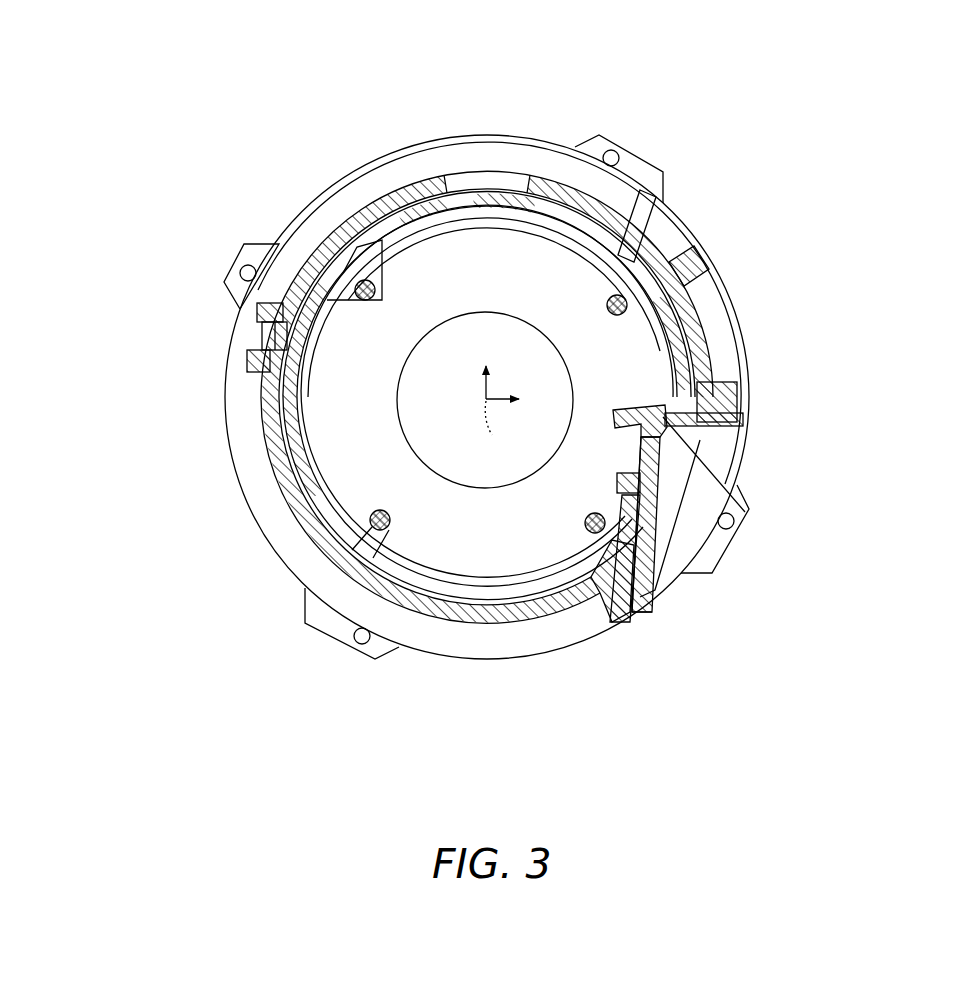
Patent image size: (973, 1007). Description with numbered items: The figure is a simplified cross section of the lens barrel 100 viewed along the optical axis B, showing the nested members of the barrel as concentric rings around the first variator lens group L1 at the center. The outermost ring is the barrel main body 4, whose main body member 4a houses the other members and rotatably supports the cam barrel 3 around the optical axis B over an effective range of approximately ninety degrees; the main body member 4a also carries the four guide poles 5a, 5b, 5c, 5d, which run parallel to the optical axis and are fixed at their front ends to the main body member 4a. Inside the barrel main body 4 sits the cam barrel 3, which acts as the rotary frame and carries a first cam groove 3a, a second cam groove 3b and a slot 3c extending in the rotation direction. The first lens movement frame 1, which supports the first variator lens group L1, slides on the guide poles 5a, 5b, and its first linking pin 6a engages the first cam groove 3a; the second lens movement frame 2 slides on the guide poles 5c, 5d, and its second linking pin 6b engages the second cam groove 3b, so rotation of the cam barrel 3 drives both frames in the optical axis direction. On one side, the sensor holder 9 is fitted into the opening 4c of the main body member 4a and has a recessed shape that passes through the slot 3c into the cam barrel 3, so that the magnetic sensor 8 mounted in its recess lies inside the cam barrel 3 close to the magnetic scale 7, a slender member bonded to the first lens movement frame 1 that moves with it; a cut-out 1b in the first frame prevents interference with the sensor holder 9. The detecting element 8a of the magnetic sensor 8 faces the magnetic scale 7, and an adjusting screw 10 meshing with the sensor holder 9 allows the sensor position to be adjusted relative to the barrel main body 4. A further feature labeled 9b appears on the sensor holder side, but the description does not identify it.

The lens barrel 100 is at (679, 112).
The first lens movement frame 1 is at (536, 210).
The cut-out 1b is at (663, 417).
The second lens movement frame 2 is at (338, 284).
The cam barrel 3 is at (680, 323).
The first cam groove 3a is at (648, 255).
The second cam groove 3b is at (278, 331).
The slot 3c is at (665, 440).
The barrel main body 4 is at (369, 138).
The main body member 4a is at (417, 155).
The opening 4c is at (683, 421).
The guide pole 5a is at (625, 300).
The guide pole 5b is at (381, 528).
The guide pole 5c is at (360, 283).
The guide pole 5d is at (598, 535).
The first linking pin 6a is at (637, 243).
The second linking pin 6b is at (273, 340).
The magnetic scale 7 is at (640, 550).
The magnetic sensor 8 is at (645, 510).
The detecting element 8a is at (655, 495).
The sensor holder 9 is at (637, 577).
The spring end 9b is at (657, 488).
The adjusting screw 10 is at (677, 472).
The first variator lens group L1 is at (395, 441).
The optical axis B is at (506, 408).